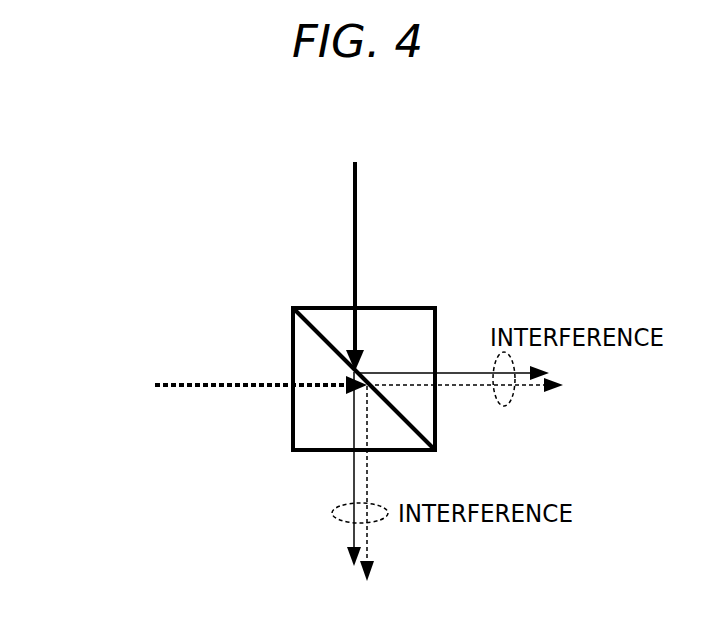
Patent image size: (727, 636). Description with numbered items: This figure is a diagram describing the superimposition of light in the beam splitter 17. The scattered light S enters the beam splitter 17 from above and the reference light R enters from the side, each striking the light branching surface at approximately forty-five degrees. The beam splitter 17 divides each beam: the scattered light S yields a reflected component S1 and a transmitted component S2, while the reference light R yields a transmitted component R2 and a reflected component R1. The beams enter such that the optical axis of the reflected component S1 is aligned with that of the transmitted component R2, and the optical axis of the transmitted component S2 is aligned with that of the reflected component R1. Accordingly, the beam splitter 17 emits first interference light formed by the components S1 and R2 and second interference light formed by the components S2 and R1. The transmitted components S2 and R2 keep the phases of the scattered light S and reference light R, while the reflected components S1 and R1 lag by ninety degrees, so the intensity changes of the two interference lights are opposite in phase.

The beam splitter 17 is at (416, 307).
The scattered light S is at (353, 248).
The reference light R is at (197, 373).
The reflected component of the scattered light S1 is at (471, 368).
The transmitted component of the reference light R2 is at (481, 390).
The transmitted component of the scattered light S2 is at (346, 482).
The reflected component of the reference light R1 is at (374, 498).